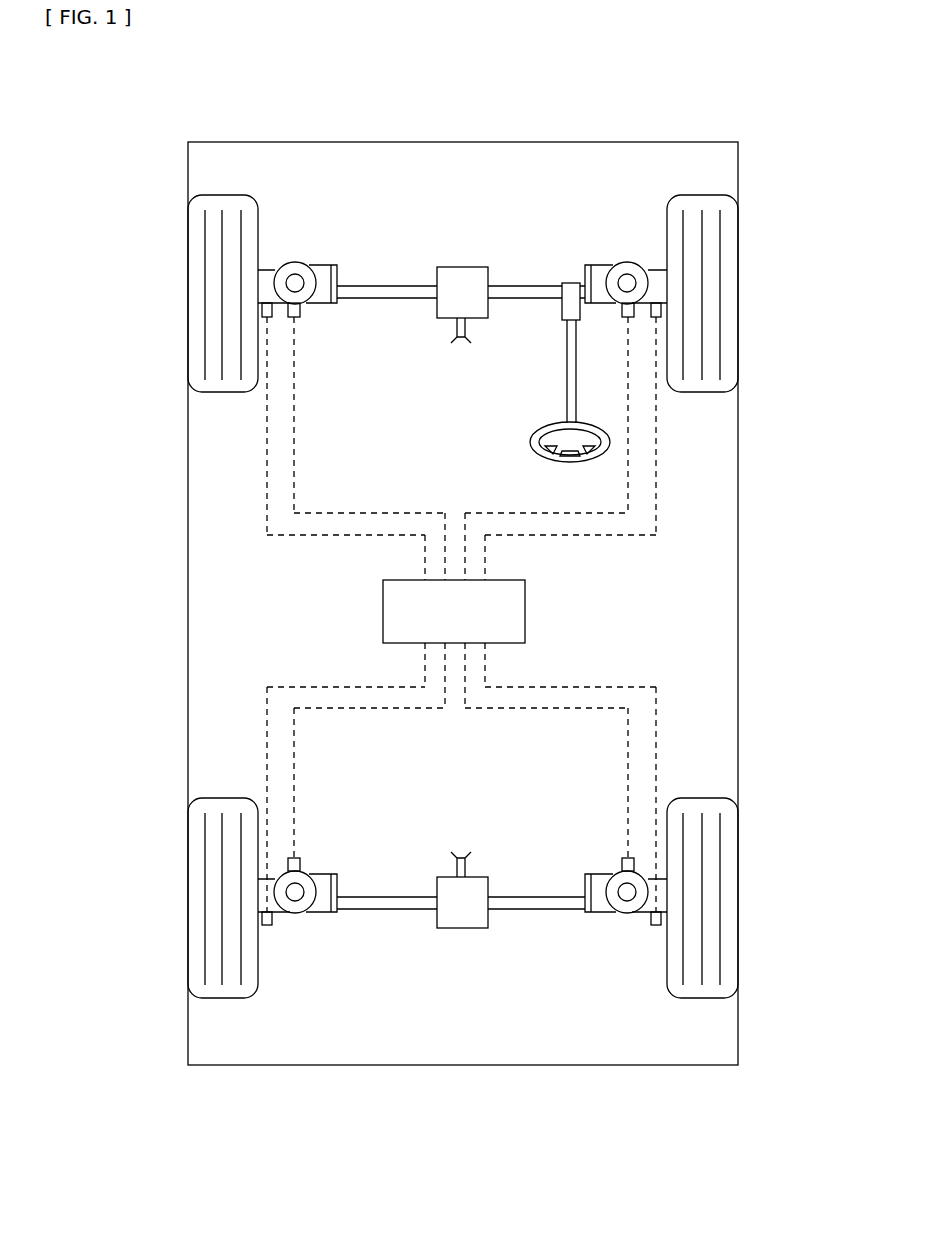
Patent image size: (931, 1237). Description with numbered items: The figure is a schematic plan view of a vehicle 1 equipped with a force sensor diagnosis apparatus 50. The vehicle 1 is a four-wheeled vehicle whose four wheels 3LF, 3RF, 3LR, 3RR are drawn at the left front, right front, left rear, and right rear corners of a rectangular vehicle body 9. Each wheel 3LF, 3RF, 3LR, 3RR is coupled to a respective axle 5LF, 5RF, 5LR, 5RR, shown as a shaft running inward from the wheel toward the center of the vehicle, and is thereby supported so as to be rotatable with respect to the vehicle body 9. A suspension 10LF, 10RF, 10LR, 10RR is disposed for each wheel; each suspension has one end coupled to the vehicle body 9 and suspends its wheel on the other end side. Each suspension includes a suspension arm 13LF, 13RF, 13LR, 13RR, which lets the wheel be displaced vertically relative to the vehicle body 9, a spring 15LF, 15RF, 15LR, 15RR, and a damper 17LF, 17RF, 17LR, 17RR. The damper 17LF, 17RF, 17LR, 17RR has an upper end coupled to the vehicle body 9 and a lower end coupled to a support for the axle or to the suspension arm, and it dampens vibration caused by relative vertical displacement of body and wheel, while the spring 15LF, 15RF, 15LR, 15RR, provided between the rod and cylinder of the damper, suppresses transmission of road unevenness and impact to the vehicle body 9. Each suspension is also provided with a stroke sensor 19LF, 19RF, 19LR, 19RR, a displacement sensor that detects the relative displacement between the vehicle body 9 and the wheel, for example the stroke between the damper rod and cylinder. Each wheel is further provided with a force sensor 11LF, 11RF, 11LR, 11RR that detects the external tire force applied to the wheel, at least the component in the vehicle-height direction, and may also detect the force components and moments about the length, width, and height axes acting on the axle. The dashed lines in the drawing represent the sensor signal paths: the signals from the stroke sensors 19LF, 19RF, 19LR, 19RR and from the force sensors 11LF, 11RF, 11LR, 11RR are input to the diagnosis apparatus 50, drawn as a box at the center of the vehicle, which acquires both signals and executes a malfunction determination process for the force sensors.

The vehicle 1 is at (742, 135).
The vehicle body 9 is at (740, 683).
The left front wheel 3LF is at (188, 238).
The right front wheel 3RF is at (738, 238).
The left rear wheel 3LR is at (188, 948).
The right rear wheel 3RR is at (738, 948).
The left front axle 5LF is at (401, 299).
The right front axle 5RF is at (509, 299).
The left rear axle 5LR is at (404, 909).
The right rear axle 5RR is at (510, 909).
The left front suspension 10LF is at (349, 266).
The right front suspension 10RF is at (573, 266).
The left rear suspension 10LR is at (349, 873).
The right rear suspension 10RR is at (573, 873).
The left front force sensor 11LF is at (265, 272).
The right front force sensor 11RF is at (657, 272).
The left rear force sensor 11LR is at (266, 925).
The right rear force sensor 11RR is at (656, 925).
The left front suspension arm 13LF is at (268, 290).
The right front suspension arm 13RF is at (655, 290).
The left rear suspension arm 13LR is at (268, 892).
The right rear suspension arm 13RR is at (655, 892).
The left front spring 15LF is at (298, 265).
The right front spring 15RF is at (624, 265).
The left rear spring 15LR is at (298, 913).
The right rear spring 15RR is at (626, 913).
The left front damper 17LF is at (313, 263).
The right front damper 17RF is at (609, 263).
The left rear damper 17LR is at (306, 907).
The right rear damper 17RR is at (617, 907).
The left front stroke sensor 19LF is at (301, 319).
The right front stroke sensor 19RF is at (622, 318).
The left rear stroke sensor 19LR is at (301, 860).
The right rear stroke sensor 19RR is at (622, 860).
The force sensor diagnosis apparatus 50 is at (525, 606).